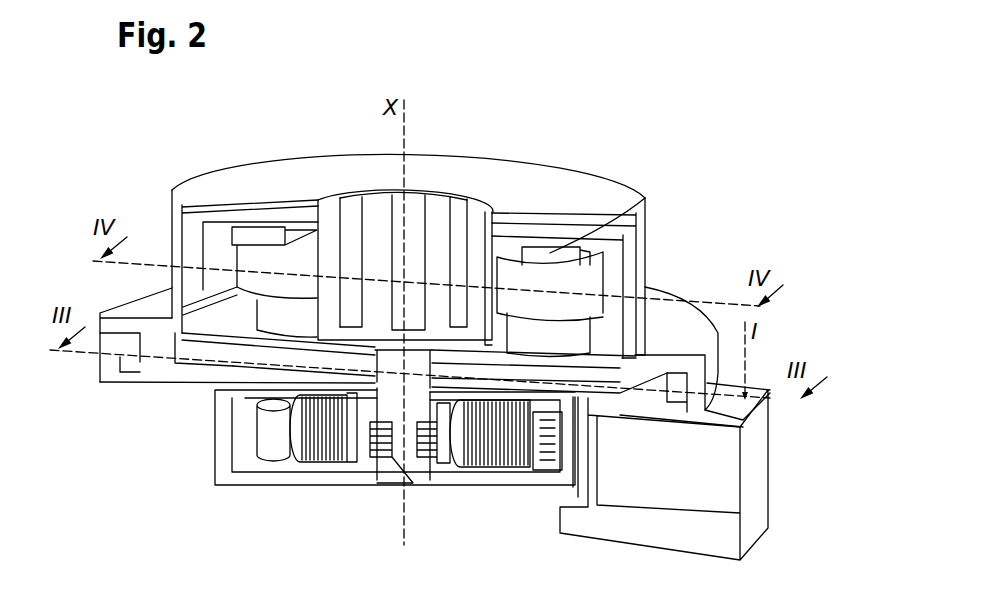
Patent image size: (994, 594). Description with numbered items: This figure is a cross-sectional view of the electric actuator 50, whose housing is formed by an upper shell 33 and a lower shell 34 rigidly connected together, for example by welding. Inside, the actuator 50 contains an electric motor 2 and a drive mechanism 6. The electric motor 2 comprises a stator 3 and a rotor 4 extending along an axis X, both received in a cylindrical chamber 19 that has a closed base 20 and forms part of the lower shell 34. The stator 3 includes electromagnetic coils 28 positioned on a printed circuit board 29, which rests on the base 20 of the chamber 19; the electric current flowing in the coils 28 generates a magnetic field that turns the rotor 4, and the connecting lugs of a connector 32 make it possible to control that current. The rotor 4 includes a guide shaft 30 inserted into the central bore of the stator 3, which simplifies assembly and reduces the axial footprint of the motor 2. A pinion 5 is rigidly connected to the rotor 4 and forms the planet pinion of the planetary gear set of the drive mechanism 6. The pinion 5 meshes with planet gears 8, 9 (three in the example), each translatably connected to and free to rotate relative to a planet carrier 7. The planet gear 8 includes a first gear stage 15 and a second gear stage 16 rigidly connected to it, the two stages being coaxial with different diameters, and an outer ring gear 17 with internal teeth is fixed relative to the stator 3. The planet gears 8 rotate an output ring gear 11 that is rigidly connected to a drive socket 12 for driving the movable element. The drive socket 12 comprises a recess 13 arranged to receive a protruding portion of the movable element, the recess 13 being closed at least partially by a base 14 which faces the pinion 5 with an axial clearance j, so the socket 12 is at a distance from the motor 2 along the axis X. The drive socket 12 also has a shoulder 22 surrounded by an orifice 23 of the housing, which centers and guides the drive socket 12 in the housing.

The electric motor 2 is at (270, 457).
The stator 3 is at (320, 460).
The rotor 4 is at (255, 413).
The pinion 5 is at (433, 453).
The drive mechanism 6 is at (140, 295).
The planet carrier 7 is at (628, 203).
The planet gear 8 is at (195, 282).
The planet gear 9 is at (605, 330).
The output ring gear 11 is at (200, 250).
The drive socket 12 is at (470, 200).
The recess 13 is at (385, 280).
The base 14 is at (378, 270).
The first gear stage 15 is at (167, 350).
The second gear stage 16 is at (233, 257).
The outer ring gear 17 is at (150, 347).
The cylindrical chamber 19 is at (232, 456).
The closed base 20 is at (250, 480).
The shoulder 22 is at (545, 255).
The orifice 23 is at (428, 185).
The electromagnetic coils 28 is at (490, 460).
The printed circuit board 29 is at (505, 473).
The guide shaft 30 is at (398, 450).
The connector 32 is at (700, 473).
The upper shell 33 is at (678, 328).
The lower shell 34 is at (100, 367).
The electric actuator 50 is at (560, 114).